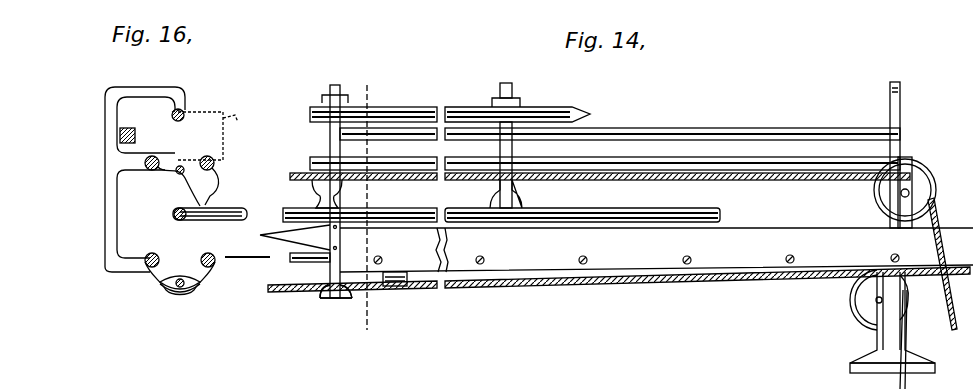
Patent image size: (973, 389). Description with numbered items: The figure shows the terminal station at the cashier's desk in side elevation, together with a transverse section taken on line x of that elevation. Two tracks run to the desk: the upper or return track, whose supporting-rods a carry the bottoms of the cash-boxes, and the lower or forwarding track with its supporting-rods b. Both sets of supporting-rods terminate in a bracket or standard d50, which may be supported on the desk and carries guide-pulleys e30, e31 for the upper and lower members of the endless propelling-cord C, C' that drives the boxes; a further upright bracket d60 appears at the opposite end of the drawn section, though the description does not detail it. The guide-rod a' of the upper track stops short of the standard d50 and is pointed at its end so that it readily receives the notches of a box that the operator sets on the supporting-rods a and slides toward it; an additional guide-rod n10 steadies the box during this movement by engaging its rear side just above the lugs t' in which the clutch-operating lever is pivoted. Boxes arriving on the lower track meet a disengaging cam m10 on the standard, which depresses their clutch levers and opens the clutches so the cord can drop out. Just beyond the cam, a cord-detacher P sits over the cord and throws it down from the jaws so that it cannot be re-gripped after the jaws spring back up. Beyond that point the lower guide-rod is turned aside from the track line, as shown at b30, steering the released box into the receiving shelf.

In FIG. 16, the guide-rod of the return-track a' is at (205, 126).
In FIG. 14, the guide-rod of the return-track a' is at (517, 145).
In FIG. 16, the additional guide-rod n10 is at (127, 132).
In FIG. 14, the additional guide-rod n10 is at (745, 128).
In FIG. 16, the lugs t' is at (102, 151).
In FIG. 16, the supporting-rods of the return-track a is at (179, 154).
In FIG. 14, the supporting-rods of the return-track a is at (672, 156).
In FIG. 16, the propelling-cord C is at (181, 186).
In FIG. 14, the propelling-cord C is at (945, 264).
In FIG. 16, the turned-aside guide-rod of the lower track b30 is at (228, 210).
In FIG. 14, the turned-aside guide-rod of the lower track b30 is at (655, 208).
In FIG. 16, the cord-detacher P is at (178, 272).
In FIG. 14, the cord-detacher P is at (397, 290).
In FIG. 16, the propelling-cord C' is at (180, 299).
In FIG. 14, the propelling-cord C' is at (619, 281).
In FIG. 14, the post d60 is at (330, 92).
In FIG. 14, the section line x x is at (363, 201).
In FIG. 14, the bracket or standard d50 is at (901, 116).
In FIG. 14, the guide-pulley e30 is at (934, 183).
In FIG. 14, the disengaging cam m10 is at (295, 237).
In FIG. 14, the supporting-rods of the forwarding-track b is at (292, 263).
In FIG. 14, the guide-pulley e31 is at (850, 300).